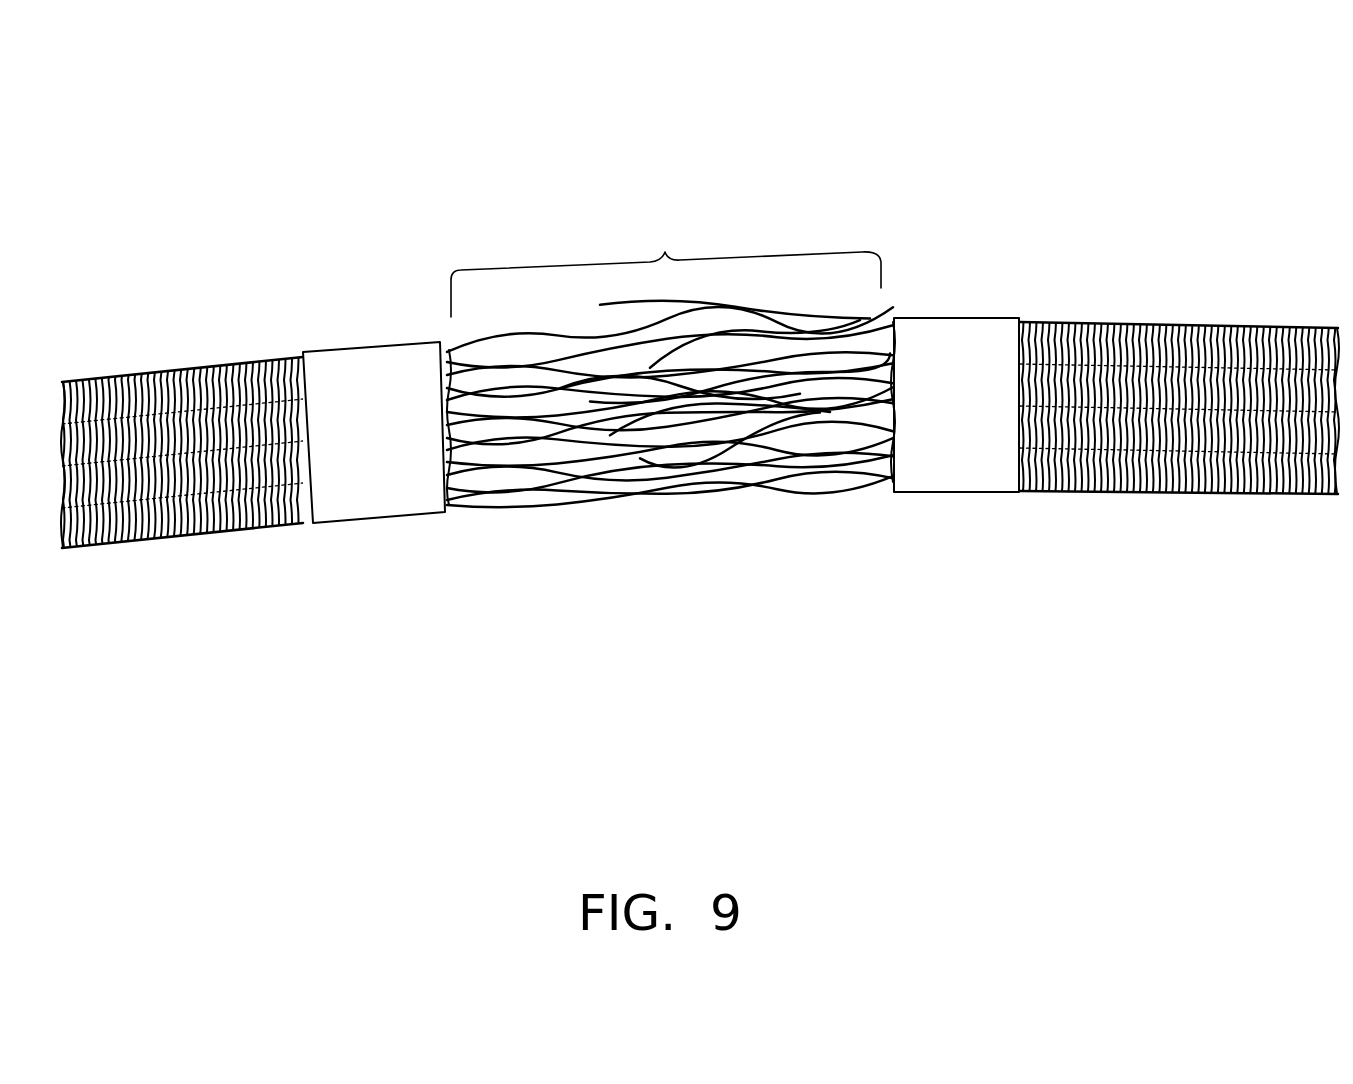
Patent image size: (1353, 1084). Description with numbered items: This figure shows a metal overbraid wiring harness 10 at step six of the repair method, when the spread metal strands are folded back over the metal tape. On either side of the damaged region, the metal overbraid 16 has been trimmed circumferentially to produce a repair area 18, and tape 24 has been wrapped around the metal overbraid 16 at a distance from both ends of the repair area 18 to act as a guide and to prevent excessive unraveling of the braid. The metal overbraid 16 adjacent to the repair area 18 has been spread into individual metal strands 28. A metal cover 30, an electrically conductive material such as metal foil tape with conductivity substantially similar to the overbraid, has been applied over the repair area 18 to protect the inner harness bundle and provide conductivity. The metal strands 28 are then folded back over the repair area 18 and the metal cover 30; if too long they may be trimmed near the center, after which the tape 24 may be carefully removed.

The metal overbraid wiring harness 10 is at (175, 138).
The metal overbraid 16 is at (160, 372).
The repair area 18 is at (663, 252).
The tape 24 is at (340, 372).
The metal strands 28 is at (476, 512).
The metal cover 30 is at (690, 465).